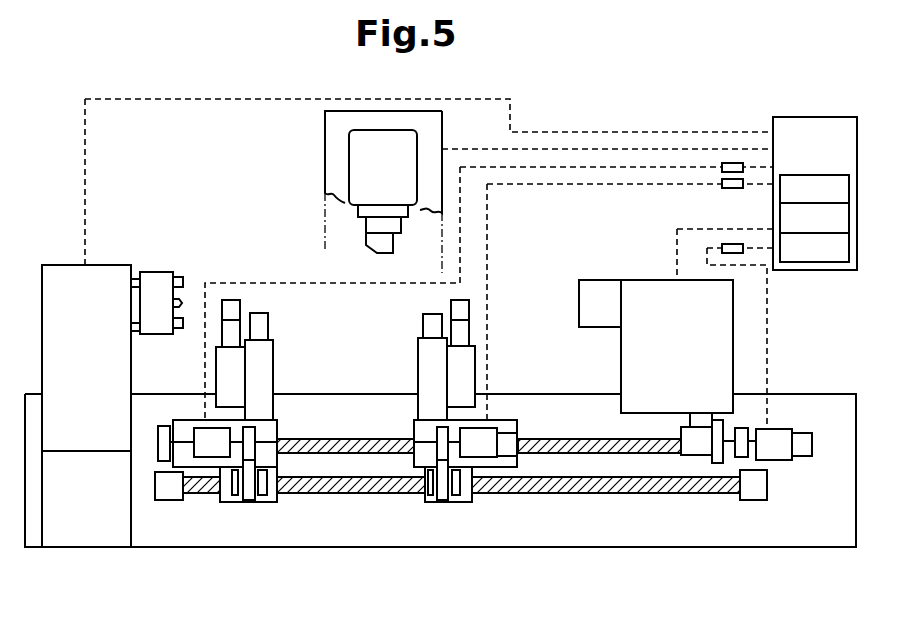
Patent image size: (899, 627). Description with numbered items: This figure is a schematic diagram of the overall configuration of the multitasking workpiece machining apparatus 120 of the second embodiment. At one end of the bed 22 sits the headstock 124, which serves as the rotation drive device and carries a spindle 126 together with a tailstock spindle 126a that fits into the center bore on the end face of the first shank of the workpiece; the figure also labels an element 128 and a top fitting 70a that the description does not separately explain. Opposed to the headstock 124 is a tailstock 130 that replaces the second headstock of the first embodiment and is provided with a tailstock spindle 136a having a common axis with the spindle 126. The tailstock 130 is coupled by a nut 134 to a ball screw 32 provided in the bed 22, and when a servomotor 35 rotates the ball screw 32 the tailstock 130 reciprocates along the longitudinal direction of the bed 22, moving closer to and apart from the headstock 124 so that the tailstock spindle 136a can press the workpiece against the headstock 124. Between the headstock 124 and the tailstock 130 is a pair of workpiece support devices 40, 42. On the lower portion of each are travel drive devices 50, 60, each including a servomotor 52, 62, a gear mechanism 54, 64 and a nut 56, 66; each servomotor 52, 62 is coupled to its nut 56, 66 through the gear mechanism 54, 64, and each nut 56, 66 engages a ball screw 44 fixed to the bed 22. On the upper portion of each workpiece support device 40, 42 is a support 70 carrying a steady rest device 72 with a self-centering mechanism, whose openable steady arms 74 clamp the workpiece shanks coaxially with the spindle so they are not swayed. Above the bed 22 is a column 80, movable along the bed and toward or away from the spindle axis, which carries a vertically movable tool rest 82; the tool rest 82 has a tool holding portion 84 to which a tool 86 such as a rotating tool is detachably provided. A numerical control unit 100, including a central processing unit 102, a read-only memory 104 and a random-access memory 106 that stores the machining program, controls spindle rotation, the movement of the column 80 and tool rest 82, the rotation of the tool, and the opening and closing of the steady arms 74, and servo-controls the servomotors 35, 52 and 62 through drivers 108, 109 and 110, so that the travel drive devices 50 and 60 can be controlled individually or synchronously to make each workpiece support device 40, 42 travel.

The bed 22 is at (826, 394).
The ball screw 32 is at (583, 440).
The servomotor 35 is at (783, 429).
The workpiece support device 40 is at (290, 335).
The workpiece support device 42 is at (402, 331).
The ball screw 44 is at (603, 494).
The travel drive device 50 is at (279, 432).
The servomotor 52 is at (200, 432).
The gear mechanism 54 is at (257, 451).
The nut 56 is at (258, 490).
The travel drive device 60 is at (510, 413).
The servomotor 62 is at (488, 457).
The gear mechanism 64 is at (437, 451).
The nut 66 is at (453, 490).
The support 70 is at (275, 374).
The tool post head 70a is at (267, 316).
The steady rest device 72 is at (216, 377).
The steady arms 74 is at (227, 335).
The column 80 is at (325, 162).
The tool rest 82 is at (355, 145).
The tool holding portion 84 is at (365, 210).
The tool 86 is at (390, 232).
The numerical control unit 100 is at (795, 117).
The central processing unit 102 is at (780, 190).
The read-only memory 104 is at (780, 220).
The random-access memory 106 is at (787, 263).
The driver 108 is at (730, 163).
The driver 109 is at (722, 186).
The driver 110 is at (722, 247).
The multitasking workpiece machining apparatus 120 is at (54, 177).
The headstock 124 is at (62, 268).
The spindle 126 is at (139, 272).
The tailstock spindle 126a is at (180, 300).
The main spindle 128 is at (163, 272).
The tailstock 130 is at (643, 283).
The nut 134 is at (681, 432).
The tailstock spindle 136a is at (577, 300).